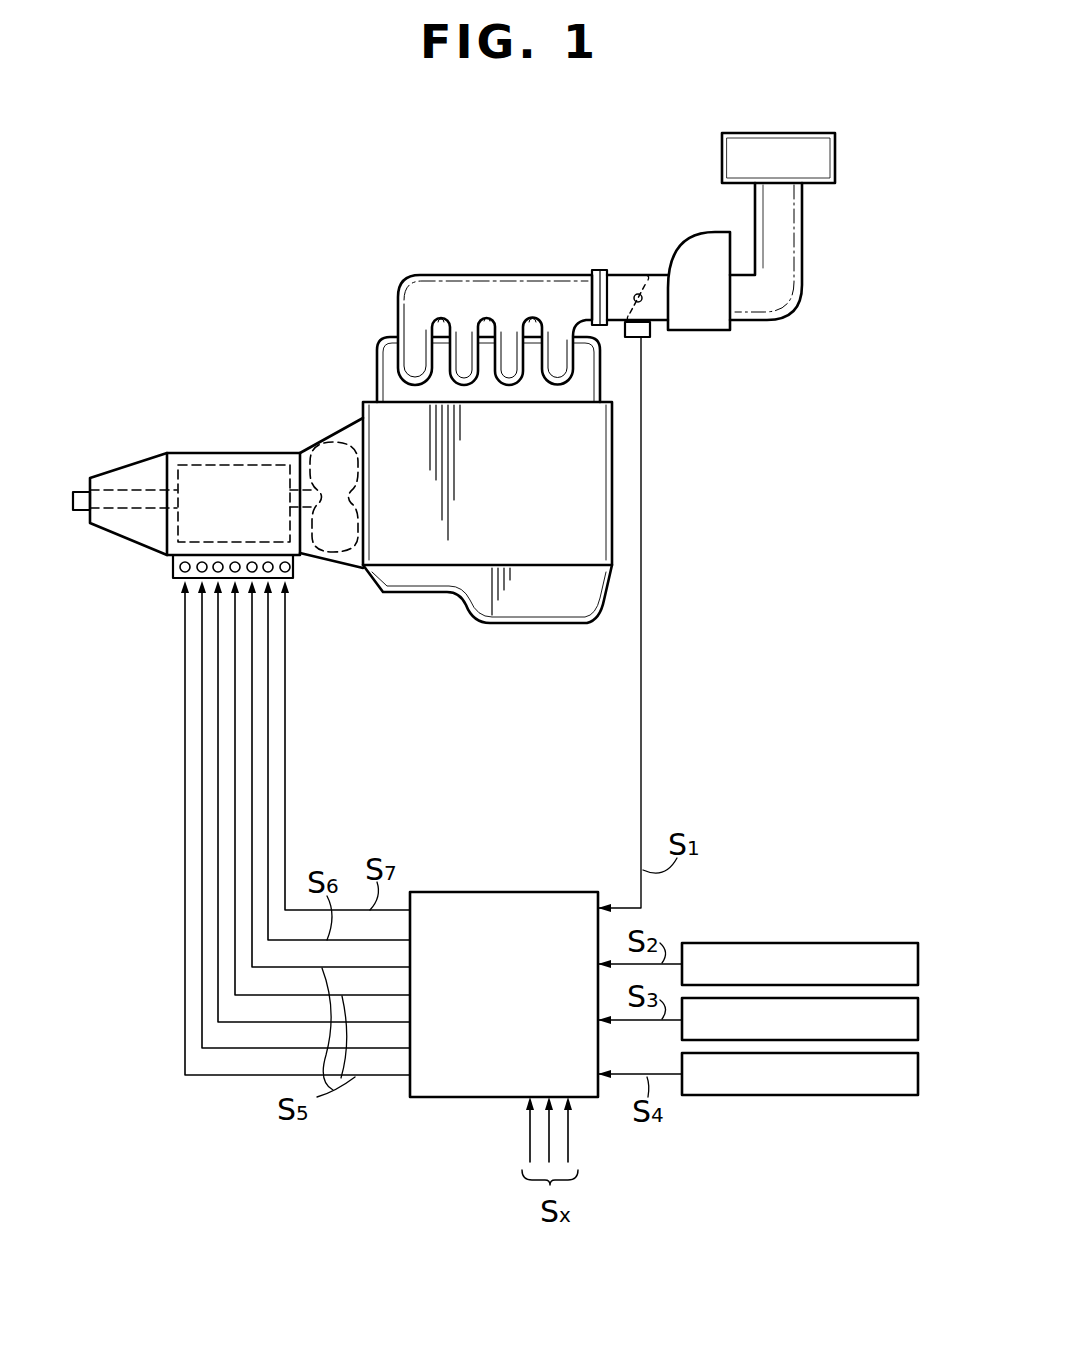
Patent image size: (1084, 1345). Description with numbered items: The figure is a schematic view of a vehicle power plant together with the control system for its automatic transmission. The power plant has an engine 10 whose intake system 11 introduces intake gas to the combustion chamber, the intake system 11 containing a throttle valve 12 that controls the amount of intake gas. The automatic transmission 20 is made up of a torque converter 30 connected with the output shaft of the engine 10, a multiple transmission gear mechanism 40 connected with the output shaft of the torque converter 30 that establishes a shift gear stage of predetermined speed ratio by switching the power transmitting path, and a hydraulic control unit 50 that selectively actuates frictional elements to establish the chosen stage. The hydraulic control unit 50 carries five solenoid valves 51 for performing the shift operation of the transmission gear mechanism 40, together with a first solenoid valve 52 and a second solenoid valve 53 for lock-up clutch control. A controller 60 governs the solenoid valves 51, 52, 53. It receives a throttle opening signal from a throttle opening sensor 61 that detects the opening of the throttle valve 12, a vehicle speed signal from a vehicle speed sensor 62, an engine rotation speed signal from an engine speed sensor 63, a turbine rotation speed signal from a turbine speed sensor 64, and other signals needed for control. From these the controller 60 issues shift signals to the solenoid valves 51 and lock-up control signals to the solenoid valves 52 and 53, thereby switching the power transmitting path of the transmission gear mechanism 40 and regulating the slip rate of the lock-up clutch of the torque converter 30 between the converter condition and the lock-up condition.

The engine 10 is at (452, 540).
The intake system 11 is at (798, 283).
The throttle valve 12 is at (627, 288).
The automatic transmission 20 is at (185, 453).
The torque converter 30 is at (326, 460).
The multiple transmission gear mechanism 40 is at (220, 465).
The hydraulic control unit 50 is at (173, 571).
The solenoid valves 51 is at (251, 561).
The first solenoid valve 52 is at (268, 561).
The second solenoid valve 53 is at (291, 567).
The controller 60 is at (502, 892).
The throttle opening sensor 61 is at (651, 329).
The vehicle speed sensor 62 is at (810, 943).
The engine speed sensor 63 is at (918, 1017).
The turbine speed sensor 64 is at (865, 1095).